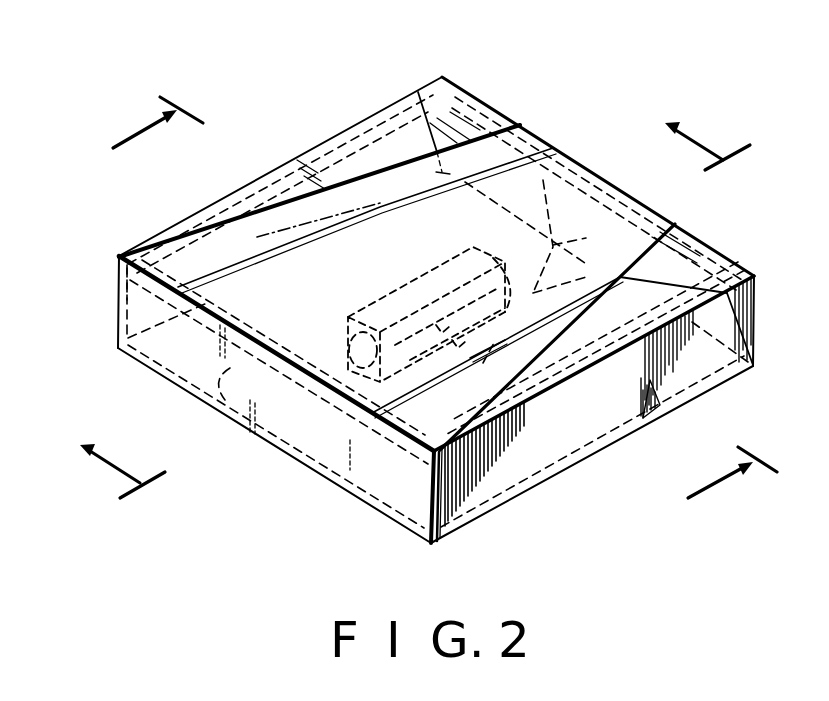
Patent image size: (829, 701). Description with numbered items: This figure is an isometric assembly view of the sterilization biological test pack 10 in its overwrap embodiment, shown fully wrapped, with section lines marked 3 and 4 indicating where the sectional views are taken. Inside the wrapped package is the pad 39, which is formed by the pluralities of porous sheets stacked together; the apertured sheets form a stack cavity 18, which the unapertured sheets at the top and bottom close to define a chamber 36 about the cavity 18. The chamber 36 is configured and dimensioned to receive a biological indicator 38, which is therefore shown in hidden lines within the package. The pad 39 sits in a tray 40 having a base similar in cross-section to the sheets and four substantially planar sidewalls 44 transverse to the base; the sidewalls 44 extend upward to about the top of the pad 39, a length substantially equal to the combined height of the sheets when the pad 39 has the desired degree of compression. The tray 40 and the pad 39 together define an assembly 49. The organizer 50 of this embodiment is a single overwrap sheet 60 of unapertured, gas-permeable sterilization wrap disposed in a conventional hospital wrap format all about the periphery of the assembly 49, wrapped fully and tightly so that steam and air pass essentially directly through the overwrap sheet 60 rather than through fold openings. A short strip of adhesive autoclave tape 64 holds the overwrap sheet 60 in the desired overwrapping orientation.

The sterilization biological test pack 10 is at (497, 82).
The stack cavity 18 is at (493, 258).
The chamber 36 is at (383, 293).
The biological indicator 38 is at (440, 283).
The pad 39 is at (357, 165).
The tray 40 is at (148, 307).
The sidewalls 44 is at (250, 245).
The assembly 49 is at (697, 402).
The organizer 50 is at (372, 518).
The overwrap sheet 60 is at (193, 340).
The adhesive autoclave tape 64 is at (483, 363).
The section line 3- 3 is at (422, 321).
The section line 4- 4 is at (428, 314).